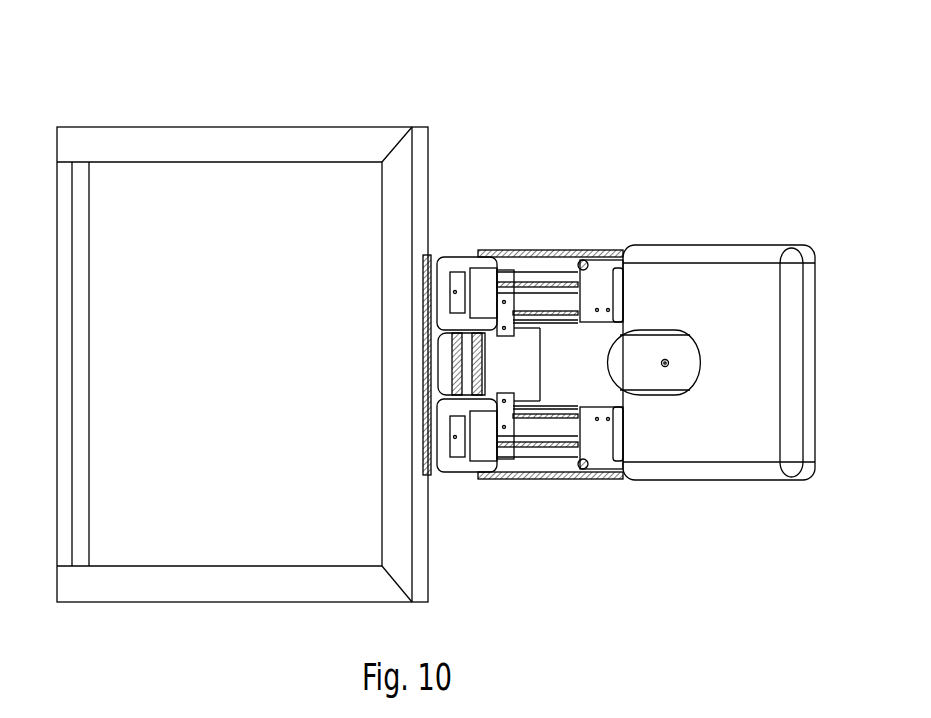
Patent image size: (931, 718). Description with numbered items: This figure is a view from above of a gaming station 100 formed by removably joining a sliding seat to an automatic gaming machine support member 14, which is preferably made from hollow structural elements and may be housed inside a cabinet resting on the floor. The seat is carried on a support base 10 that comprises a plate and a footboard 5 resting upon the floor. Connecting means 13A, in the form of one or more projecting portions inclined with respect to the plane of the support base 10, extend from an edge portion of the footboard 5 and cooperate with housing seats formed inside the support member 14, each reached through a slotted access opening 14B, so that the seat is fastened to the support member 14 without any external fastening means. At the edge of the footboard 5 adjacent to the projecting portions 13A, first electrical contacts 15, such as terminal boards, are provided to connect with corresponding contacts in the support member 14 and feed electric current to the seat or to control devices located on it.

The gaming station 100 is at (700, 138).
The support base 10 is at (658, 215).
The footboard 5 is at (550, 462).
The first electrical contacts 15 is at (515, 295).
The connecting means 13A is at (452, 258).
The automatic gaming machine support member 14 is at (188, 587).
The slotted access opening 14B is at (440, 393).